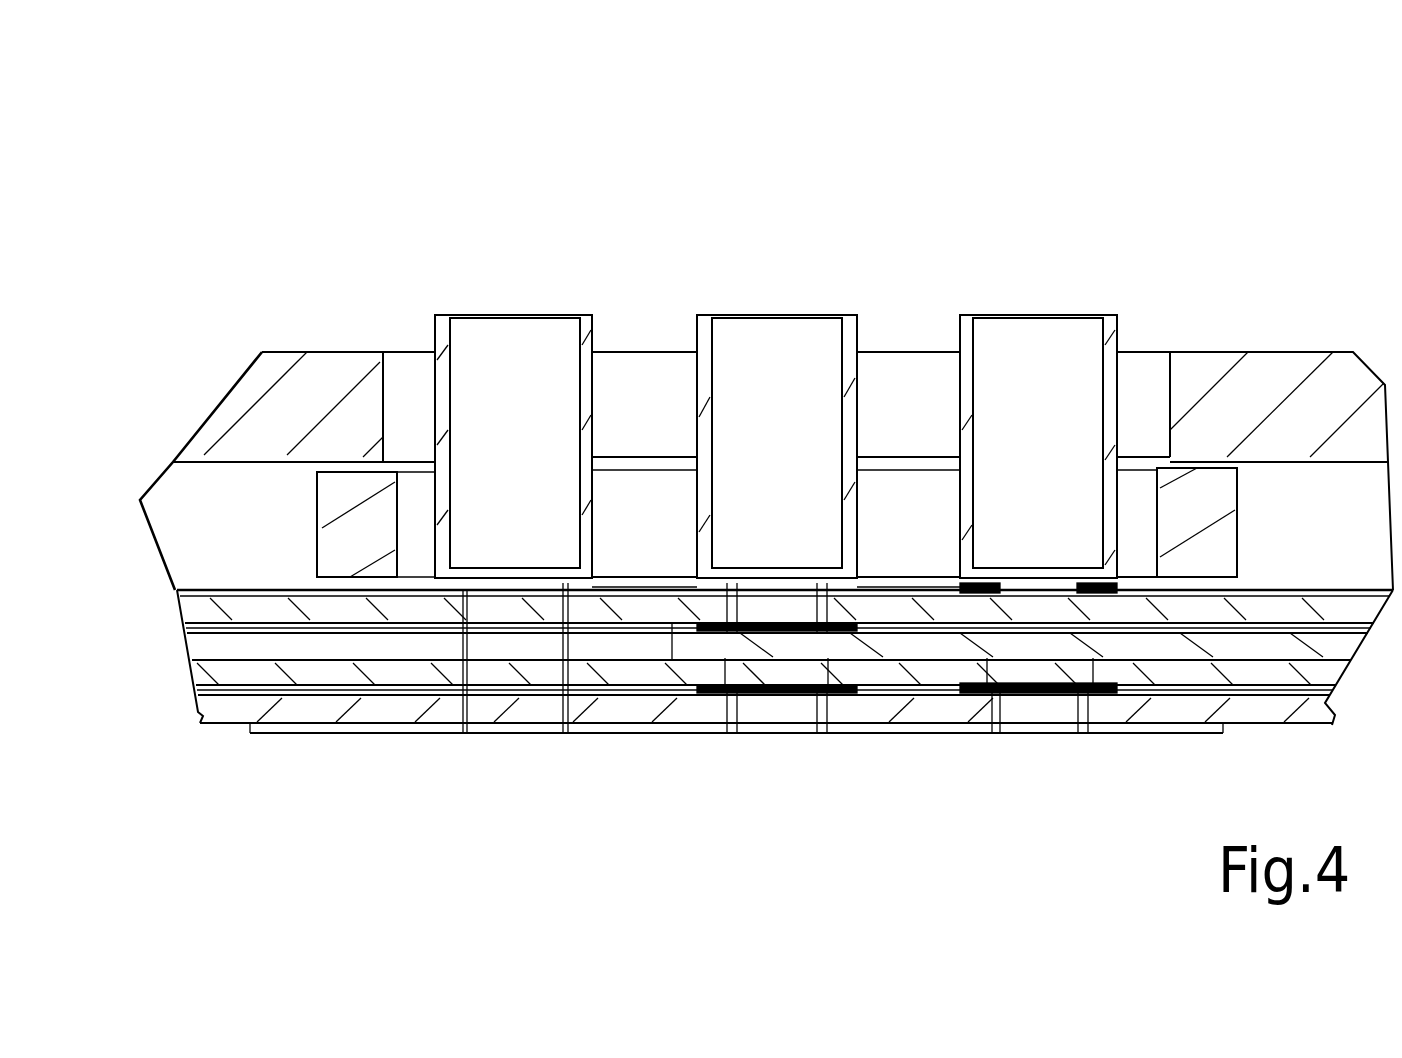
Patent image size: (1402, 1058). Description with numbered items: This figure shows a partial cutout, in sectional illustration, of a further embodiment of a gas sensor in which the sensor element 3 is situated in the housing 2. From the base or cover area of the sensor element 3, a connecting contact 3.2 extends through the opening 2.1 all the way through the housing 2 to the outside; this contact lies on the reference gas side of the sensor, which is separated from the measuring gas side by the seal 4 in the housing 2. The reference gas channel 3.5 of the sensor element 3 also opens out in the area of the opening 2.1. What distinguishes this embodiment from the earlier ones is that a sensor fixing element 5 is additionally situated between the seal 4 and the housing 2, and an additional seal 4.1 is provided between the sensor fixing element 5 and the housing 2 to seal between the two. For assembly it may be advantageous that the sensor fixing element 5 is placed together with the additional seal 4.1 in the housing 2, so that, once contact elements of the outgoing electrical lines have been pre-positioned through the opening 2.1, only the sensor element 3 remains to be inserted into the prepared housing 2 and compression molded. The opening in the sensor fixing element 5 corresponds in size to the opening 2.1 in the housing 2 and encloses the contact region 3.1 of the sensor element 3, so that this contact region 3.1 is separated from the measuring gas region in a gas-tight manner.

The housing 2 is at (746, 445).
The opening 2.1 is at (813, 324).
The sensor element 3 is at (785, 491).
The contact region 3.1 is at (776, 399).
The connecting contact 3.2 is at (776, 309).
The reference gas channel 3.5 is at (717, 740).
The seal 4 is at (945, 736).
The additional seal 4.1 is at (1251, 386).
The sensor fixing element 5 is at (442, 358).